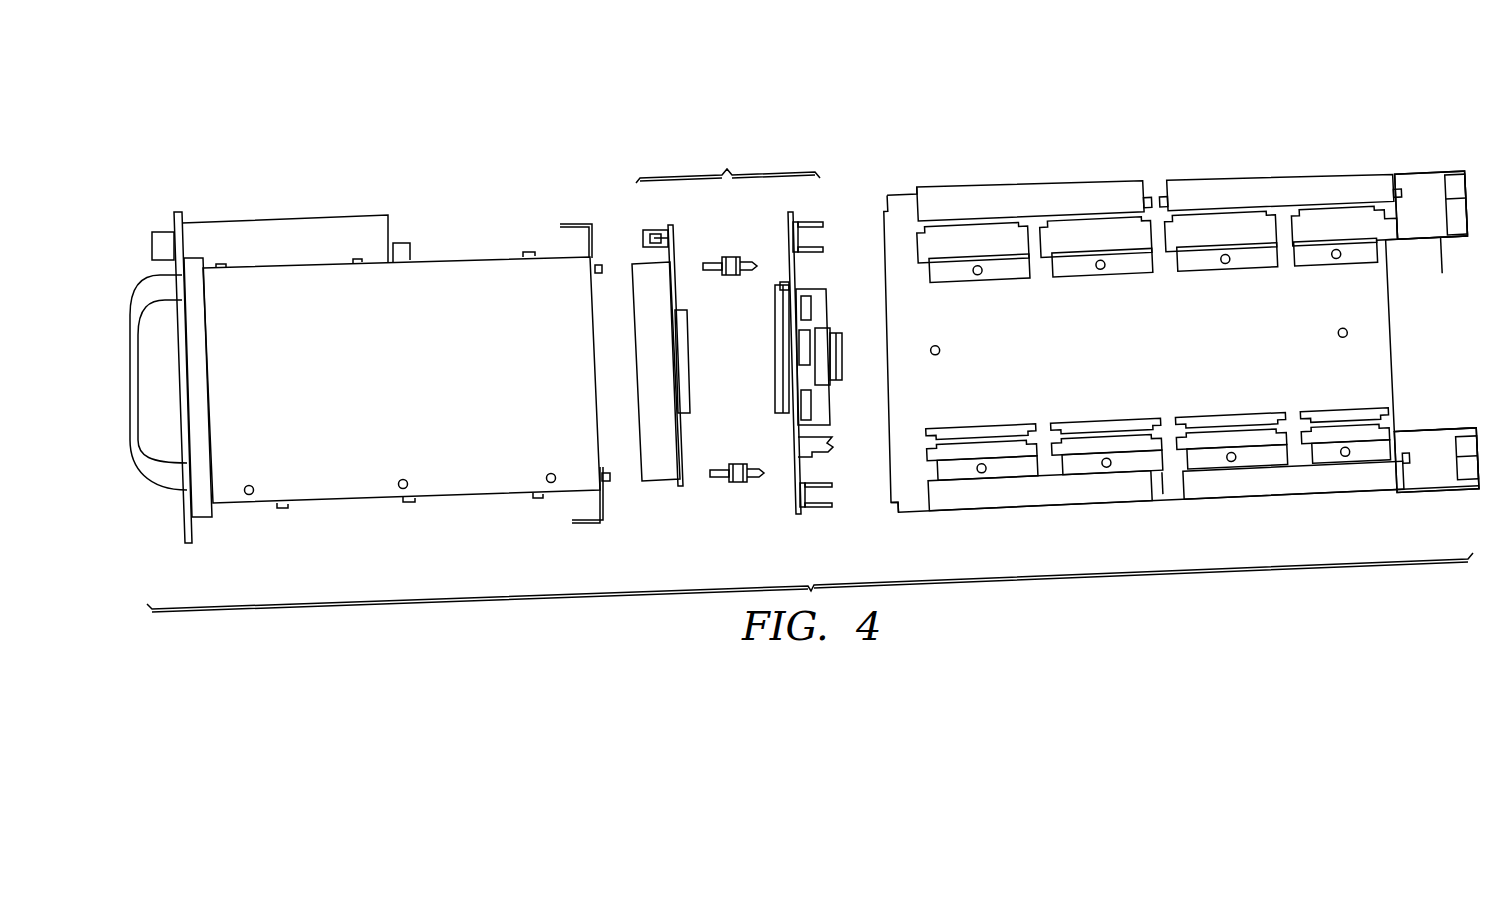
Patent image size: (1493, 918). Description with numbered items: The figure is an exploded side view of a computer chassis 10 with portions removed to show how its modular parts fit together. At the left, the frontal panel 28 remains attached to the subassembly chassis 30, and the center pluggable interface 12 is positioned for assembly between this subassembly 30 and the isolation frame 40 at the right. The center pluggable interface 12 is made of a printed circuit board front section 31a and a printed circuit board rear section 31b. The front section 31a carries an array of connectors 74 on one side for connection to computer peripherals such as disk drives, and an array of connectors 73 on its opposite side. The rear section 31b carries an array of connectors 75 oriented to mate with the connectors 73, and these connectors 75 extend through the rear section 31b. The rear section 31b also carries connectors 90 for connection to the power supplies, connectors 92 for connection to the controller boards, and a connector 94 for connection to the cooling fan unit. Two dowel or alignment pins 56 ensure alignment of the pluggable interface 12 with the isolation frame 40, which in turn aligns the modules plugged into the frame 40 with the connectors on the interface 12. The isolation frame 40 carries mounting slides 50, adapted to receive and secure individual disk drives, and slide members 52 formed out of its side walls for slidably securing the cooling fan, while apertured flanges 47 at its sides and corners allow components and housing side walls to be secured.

The chassis 10 is at (1015, 100).
The center pluggable interface 12 is at (728, 161).
The frontal panel 28 is at (177, 212).
The subassembly chassis 30 is at (472, 258).
The printed circuit board front section 31a is at (683, 475).
The printed circuit board rear section 31b is at (795, 443).
The isolation frame 40 is at (1247, 172).
The flanges 47 is at (1457, 238).
The mounting slides 50 is at (1425, 372).
The slide members 52 is at (1340, 427).
The alignment pins 56 is at (730, 253).
The connectors 73 is at (688, 360).
The connectors 74 is at (658, 467).
The connectors 75 is at (775, 330).
The connectors 90 is at (823, 308).
The connectors 92 is at (808, 224).
The connector 94 is at (812, 452).